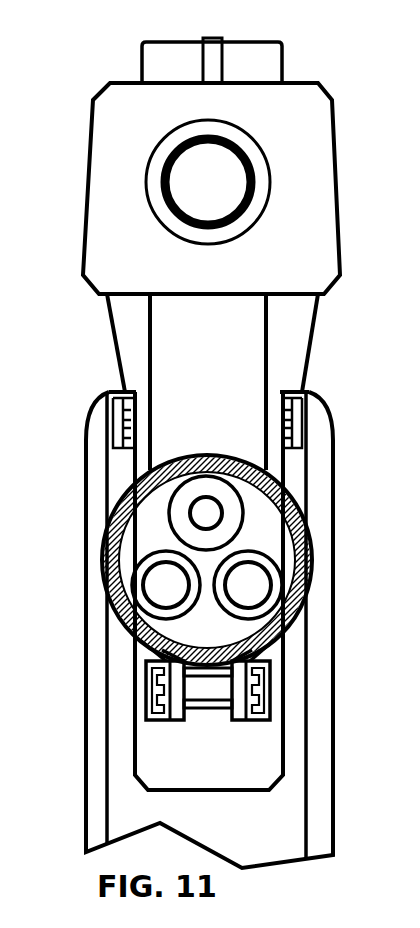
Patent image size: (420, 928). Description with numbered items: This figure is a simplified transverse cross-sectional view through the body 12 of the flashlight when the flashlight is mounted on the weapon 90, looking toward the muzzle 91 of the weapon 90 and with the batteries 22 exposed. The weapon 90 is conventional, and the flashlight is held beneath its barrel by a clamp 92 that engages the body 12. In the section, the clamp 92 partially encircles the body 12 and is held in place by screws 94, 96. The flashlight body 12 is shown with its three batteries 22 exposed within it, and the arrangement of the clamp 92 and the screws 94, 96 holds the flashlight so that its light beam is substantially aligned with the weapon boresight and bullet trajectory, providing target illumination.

The weapon 90 is at (78, 76).
The muzzle 91 is at (223, 195).
The clamp 92 is at (92, 562).
The body 12 is at (158, 468).
The batteries 22 is at (205, 478).
The screws 96 is at (111, 437).
The screws 94 is at (253, 722).